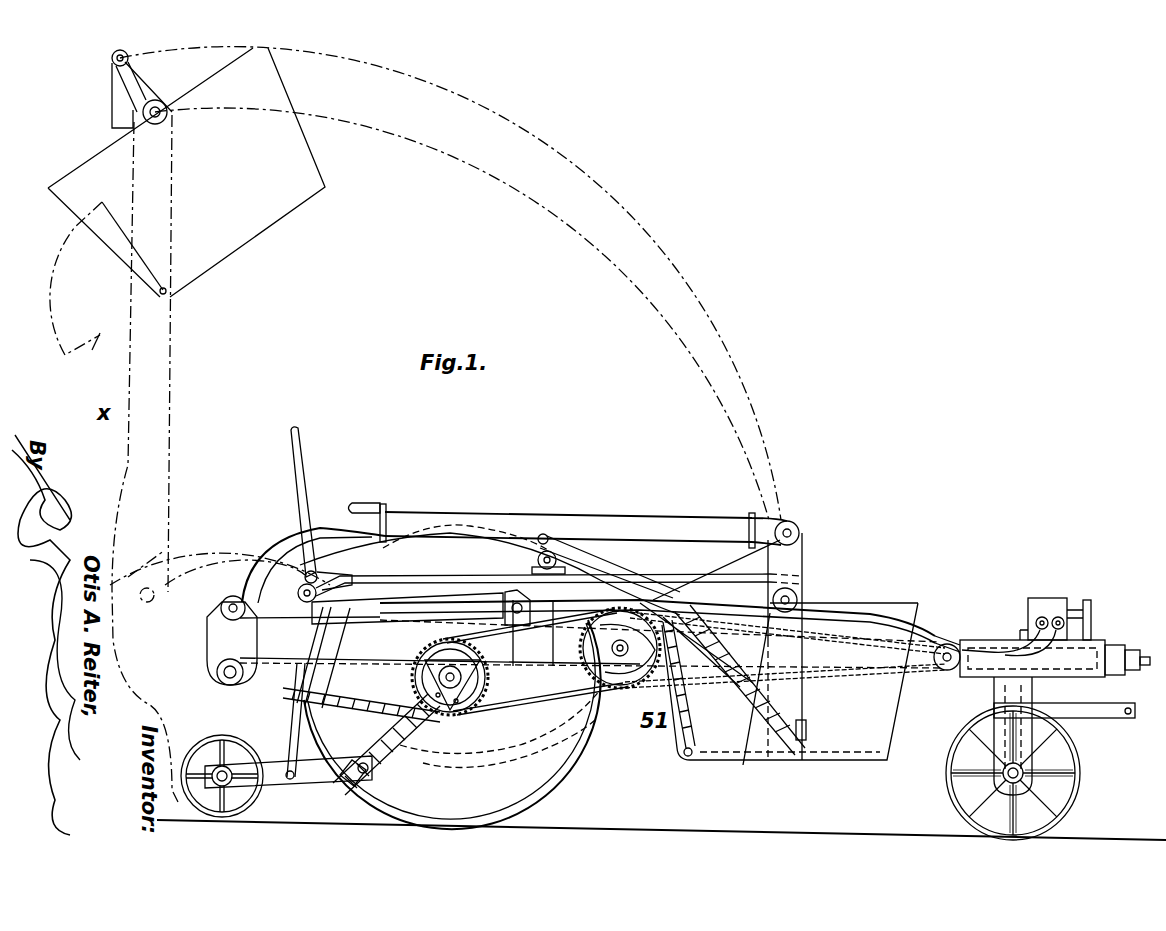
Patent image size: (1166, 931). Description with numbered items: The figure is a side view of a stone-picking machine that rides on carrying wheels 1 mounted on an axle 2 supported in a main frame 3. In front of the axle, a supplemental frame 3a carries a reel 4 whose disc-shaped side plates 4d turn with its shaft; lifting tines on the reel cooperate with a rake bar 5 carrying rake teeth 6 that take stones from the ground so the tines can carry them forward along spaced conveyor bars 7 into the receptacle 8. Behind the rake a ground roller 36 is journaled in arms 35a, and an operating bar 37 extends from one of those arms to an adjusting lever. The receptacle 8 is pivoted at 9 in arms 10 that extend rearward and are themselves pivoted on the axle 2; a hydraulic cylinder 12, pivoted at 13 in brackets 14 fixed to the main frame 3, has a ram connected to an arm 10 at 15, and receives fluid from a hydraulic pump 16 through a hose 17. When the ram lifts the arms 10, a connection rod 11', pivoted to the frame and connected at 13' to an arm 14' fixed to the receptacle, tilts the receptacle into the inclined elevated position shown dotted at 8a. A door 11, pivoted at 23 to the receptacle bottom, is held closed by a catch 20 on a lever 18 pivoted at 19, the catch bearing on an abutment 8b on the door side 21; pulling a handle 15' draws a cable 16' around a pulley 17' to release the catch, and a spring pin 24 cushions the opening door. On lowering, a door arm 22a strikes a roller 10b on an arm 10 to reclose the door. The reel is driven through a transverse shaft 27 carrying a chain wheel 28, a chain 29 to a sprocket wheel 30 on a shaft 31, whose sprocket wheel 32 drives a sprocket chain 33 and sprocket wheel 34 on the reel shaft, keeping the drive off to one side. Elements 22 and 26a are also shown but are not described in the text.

The carrying wheels 1 is at (222, 535).
The axle 2 is at (240, 686).
The main frame 3 is at (282, 668).
The supplemental frame 3a is at (270, 662).
The reel 4 is at (560, 778).
The side plates 4d is at (500, 746).
The rake bar 5 is at (340, 782).
The rake teeth 6 is at (372, 792).
The conveyor bars 7 is at (470, 565).
The receptacle 8 is at (880, 708).
The receptacle in elevated inclined position 8a is at (305, 166).
The abutment 8b is at (808, 737).
The pivot 9 is at (168, 120).
The arms 10 is at (298, 593).
The roller 10b is at (545, 552).
The door 11 is at (374, 541).
The connection rod 11' is at (423, 305).
The cylinder 12 is at (390, 600).
The cylinder pivot 13 is at (504, 585).
The rod pivot connection 13' is at (453, 335).
The brackets 14 is at (531, 646).
The receptacle arm 14' is at (486, 410).
The piston connection 15 is at (272, 508).
The handle 15' is at (369, 506).
The hydraulic pump 16 is at (1026, 617).
The flexible cable 16' is at (703, 502).
The hose 17 is at (948, 610).
The pulley 17' is at (820, 495).
The lever 18 is at (757, 755).
The lever pivot 19 is at (800, 752).
The catch 20 is at (805, 722).
The door side 21 is at (62, 296).
The bar 22 is at (682, 706).
The door arm 22a is at (588, 570).
The door pivot 23 is at (170, 293).
The spring pin 24 is at (700, 632).
The axle housing 26a is at (1145, 655).
The transverse shaft 27 is at (952, 647).
The chain wheel 28 is at (950, 671).
The chain 29 is at (845, 668).
The sprocket wheel 30 is at (630, 684).
The shaft 31 is at (630, 688).
The sprocket wheel 32 is at (535, 662).
The sprocket chain 33 is at (545, 690).
The sprocket wheel 34 is at (492, 692).
The roller arms 35a is at (272, 772).
The ground roller 36 is at (222, 742).
The operating bar 37 is at (305, 730).